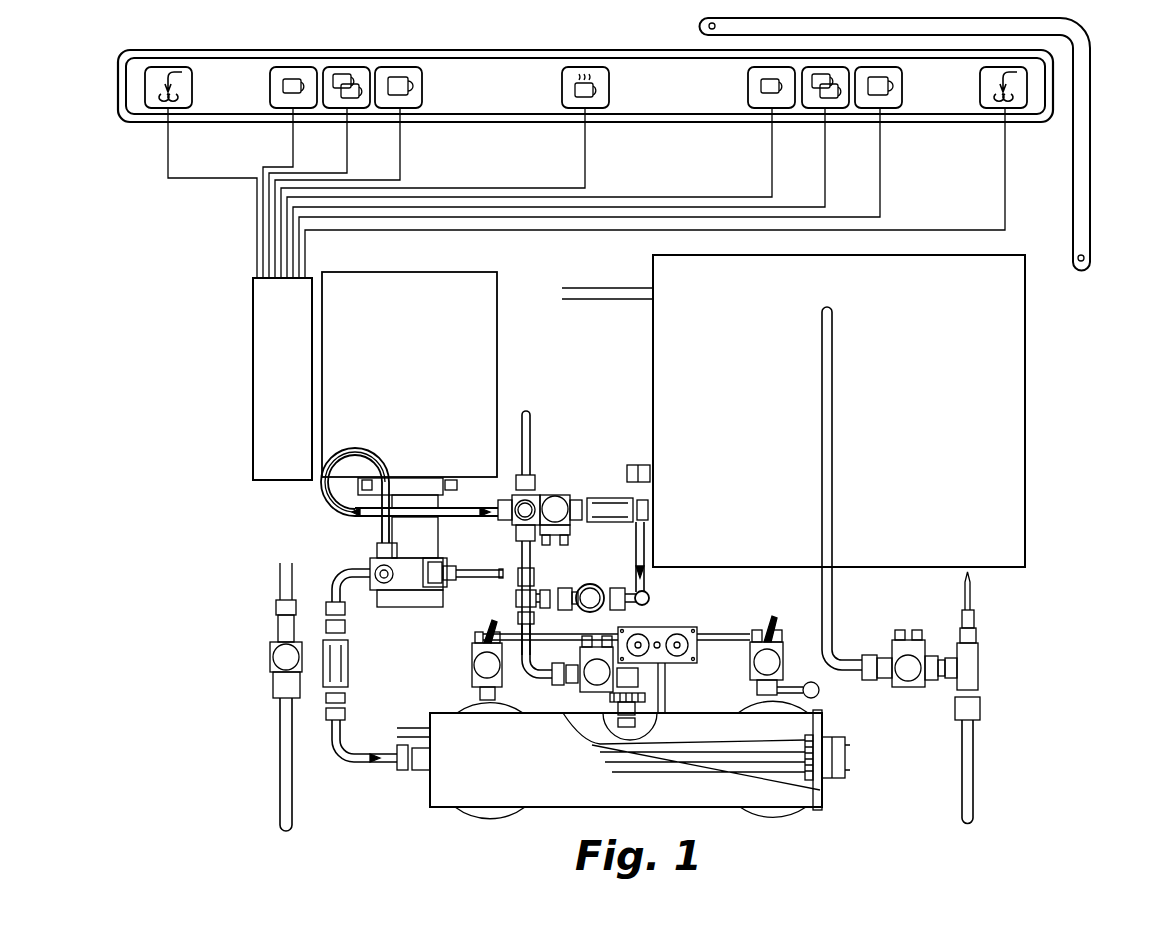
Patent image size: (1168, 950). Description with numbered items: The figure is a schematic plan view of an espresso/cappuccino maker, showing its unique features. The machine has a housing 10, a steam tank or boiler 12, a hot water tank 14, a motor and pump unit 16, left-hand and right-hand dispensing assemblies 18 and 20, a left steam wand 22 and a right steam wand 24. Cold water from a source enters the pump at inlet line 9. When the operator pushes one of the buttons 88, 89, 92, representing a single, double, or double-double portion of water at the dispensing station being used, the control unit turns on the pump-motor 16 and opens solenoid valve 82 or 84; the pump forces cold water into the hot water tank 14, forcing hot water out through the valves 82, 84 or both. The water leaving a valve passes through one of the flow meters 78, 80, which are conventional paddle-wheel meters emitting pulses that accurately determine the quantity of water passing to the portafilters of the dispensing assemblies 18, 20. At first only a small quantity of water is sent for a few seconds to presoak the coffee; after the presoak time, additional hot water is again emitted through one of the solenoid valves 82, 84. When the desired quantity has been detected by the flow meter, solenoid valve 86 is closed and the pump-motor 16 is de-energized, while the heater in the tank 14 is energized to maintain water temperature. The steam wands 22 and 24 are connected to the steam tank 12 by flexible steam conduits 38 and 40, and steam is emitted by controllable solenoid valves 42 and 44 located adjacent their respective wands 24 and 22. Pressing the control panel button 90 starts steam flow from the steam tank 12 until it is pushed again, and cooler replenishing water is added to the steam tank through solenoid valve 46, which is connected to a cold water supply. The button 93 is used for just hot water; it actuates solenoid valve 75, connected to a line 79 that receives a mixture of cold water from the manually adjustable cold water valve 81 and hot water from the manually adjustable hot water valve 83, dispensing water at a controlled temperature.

The inlet line 9 is at (477, 560).
The housing 10 is at (1088, 160).
The steam tank 12 is at (934, 396).
The hot water tank 14 is at (517, 776).
The motor and pump unit 16 is at (419, 381).
The left-hand dispensing assembly 18 is at (493, 622).
The right-hand dispensing assembly 20 is at (772, 622).
The left steam wand 22 is at (290, 770).
The right steam wand 24 is at (977, 770).
The flexible steam conduit 38 is at (580, 293).
The flexible steam conduit 40 is at (830, 625).
The solenoid valve 42 is at (908, 672).
The solenoid valve 44 is at (275, 655).
The solenoid valve 46 is at (577, 497).
The solenoid valve 75 is at (598, 682).
The flow meter 78 is at (647, 627).
The line 79 is at (517, 665).
The flow meter 80 is at (687, 627).
The cold water valve 81 is at (535, 490).
The solenoid valve 82 is at (482, 670).
The hot water valve 83 is at (590, 597).
The solenoid valve 84 is at (768, 670).
The solenoid valve 86 is at (435, 580).
The button 88 is at (748, 117).
The button 89 is at (850, 113).
The control panel button 90 is at (977, 103).
The button 92 is at (910, 112).
The button 93 is at (612, 118).